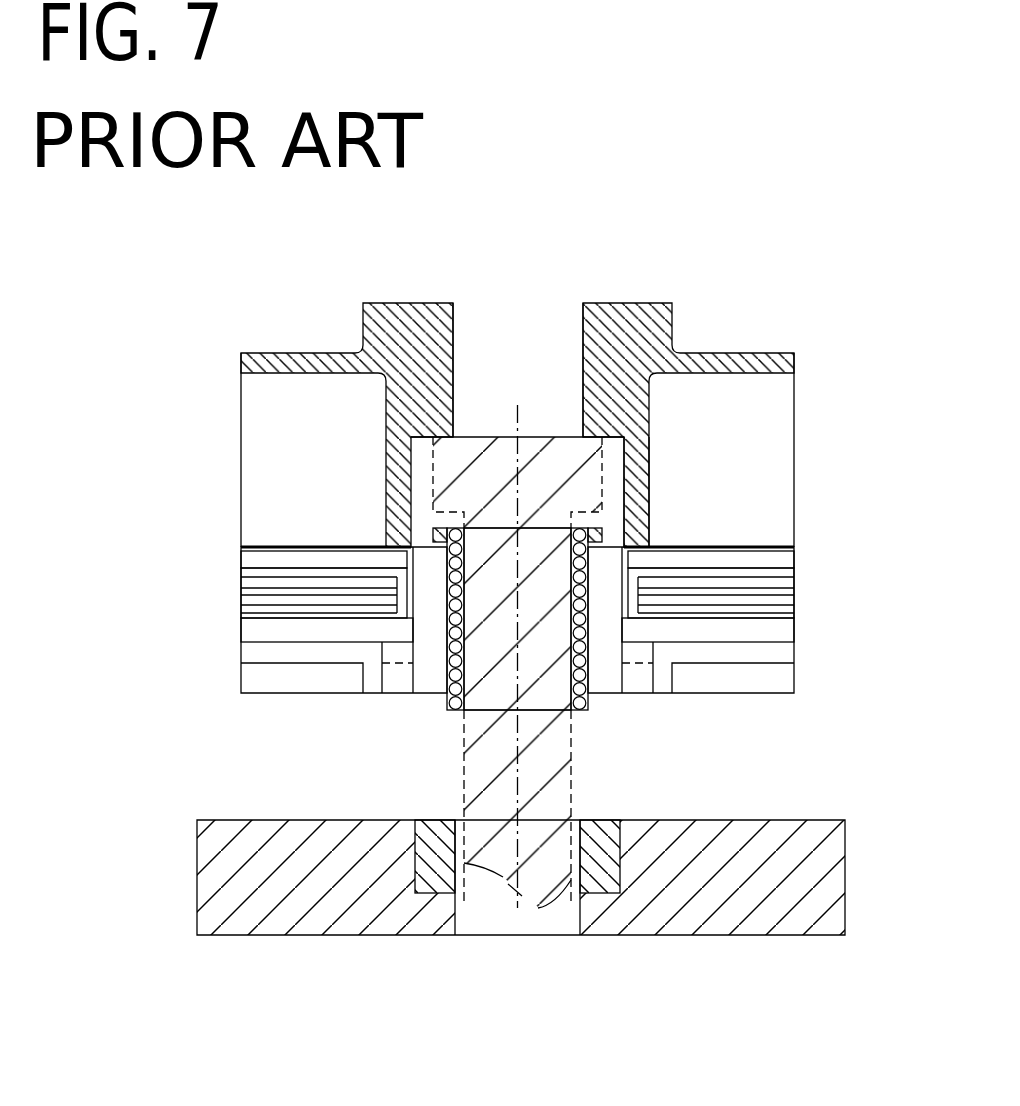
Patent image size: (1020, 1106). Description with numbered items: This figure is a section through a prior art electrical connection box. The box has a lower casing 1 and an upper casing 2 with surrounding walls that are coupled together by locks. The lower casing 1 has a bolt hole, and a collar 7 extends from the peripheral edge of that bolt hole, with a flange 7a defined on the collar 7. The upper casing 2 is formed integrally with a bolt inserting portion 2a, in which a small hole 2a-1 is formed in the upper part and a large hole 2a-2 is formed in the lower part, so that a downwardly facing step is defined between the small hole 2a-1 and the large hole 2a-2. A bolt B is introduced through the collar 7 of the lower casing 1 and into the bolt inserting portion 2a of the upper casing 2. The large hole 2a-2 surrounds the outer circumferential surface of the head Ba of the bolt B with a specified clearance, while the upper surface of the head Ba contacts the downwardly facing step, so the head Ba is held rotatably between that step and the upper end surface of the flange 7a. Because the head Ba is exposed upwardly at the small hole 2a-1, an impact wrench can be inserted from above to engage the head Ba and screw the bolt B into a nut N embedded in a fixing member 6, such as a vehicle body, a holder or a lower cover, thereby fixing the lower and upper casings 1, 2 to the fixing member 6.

The upper casing 2 is at (764, 357).
The bolt inserting portion 2a is at (422, 462).
The small hole 2a-1 is at (528, 332).
The large hole 2a-2 is at (645, 472).
The collar 7 is at (452, 672).
The flange 7a is at (430, 532).
The lower casing 1 is at (775, 652).
The bolt B is at (578, 752).
The bolt head Ba is at (490, 462).
The nut N is at (435, 867).
The fixing member 6 is at (712, 880).